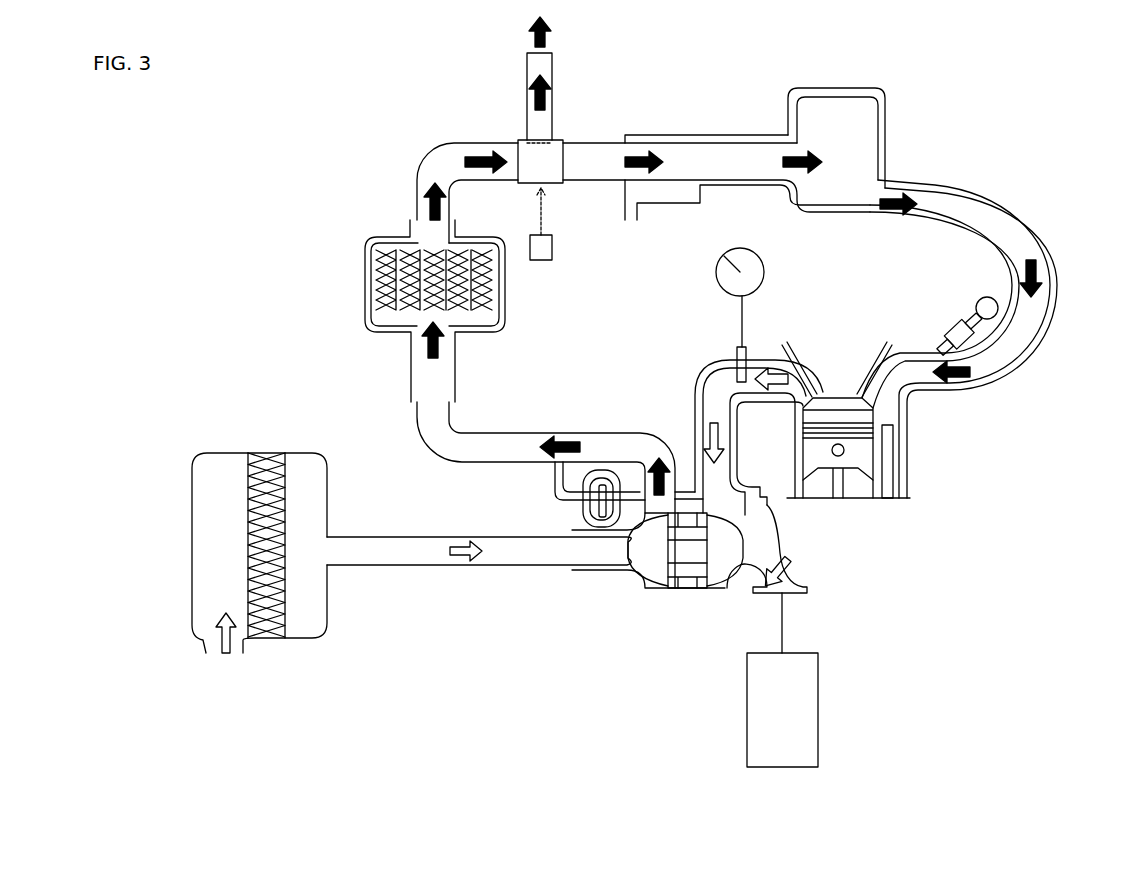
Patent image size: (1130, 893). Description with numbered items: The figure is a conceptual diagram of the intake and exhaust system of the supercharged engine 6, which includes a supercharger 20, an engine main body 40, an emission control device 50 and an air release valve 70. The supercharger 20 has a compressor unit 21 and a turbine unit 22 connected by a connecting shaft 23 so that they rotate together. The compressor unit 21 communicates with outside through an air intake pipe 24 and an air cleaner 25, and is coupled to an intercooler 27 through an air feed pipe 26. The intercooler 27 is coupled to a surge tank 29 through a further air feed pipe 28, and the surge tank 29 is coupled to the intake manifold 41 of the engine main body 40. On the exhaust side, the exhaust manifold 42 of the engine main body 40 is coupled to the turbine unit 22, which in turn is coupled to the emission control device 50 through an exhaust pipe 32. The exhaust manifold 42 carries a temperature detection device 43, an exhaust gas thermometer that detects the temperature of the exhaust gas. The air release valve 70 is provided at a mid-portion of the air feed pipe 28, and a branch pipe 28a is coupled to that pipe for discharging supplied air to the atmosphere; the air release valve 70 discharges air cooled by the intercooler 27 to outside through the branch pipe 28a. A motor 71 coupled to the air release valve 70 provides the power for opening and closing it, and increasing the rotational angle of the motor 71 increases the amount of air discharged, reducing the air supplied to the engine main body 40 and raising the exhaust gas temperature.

The supercharged engine 6 is at (1105, 60).
The supercharger 20 is at (578, 667).
The compressor unit 21 is at (658, 593).
The turbine unit 22 is at (713, 593).
The connecting shaft 23 is at (683, 593).
The air intake pipe 24 is at (417, 565).
The air cleaner 25 is at (192, 571).
The air feed pipe 26 is at (611, 430).
The intercooler 27 is at (493, 292).
The air feed pipe 28 is at (602, 173).
The branch pipe 28a is at (553, 113).
The surge tank 29 is at (875, 127).
The exhaust pipe 32 is at (807, 593).
The engine main body 40 is at (942, 470).
The intake manifold 41 is at (918, 378).
The exhaust manifold 42 is at (787, 390).
The temperature detection device 43 is at (765, 275).
The emission control device 50 is at (810, 720).
The air release valve 70 is at (535, 183).
The motor 71 is at (552, 247).